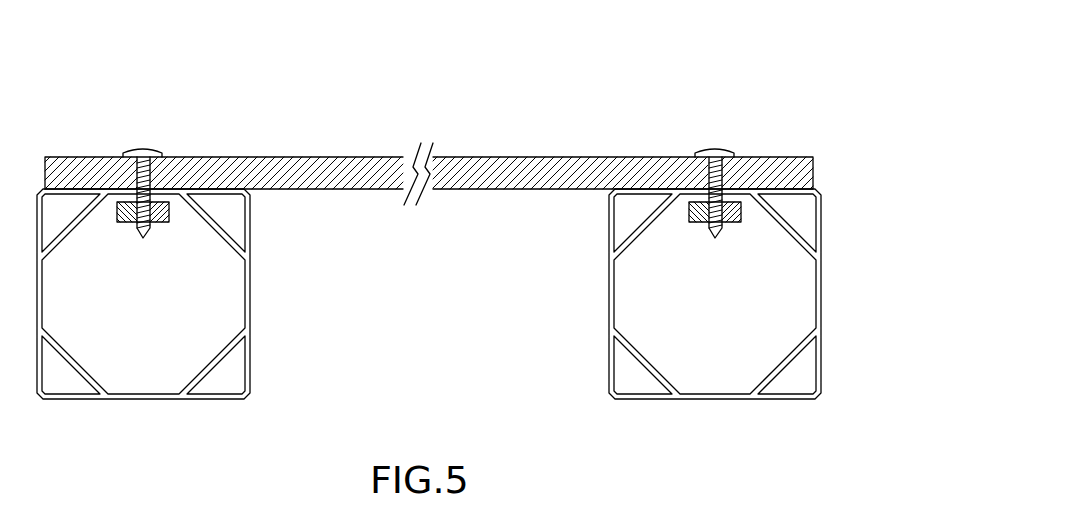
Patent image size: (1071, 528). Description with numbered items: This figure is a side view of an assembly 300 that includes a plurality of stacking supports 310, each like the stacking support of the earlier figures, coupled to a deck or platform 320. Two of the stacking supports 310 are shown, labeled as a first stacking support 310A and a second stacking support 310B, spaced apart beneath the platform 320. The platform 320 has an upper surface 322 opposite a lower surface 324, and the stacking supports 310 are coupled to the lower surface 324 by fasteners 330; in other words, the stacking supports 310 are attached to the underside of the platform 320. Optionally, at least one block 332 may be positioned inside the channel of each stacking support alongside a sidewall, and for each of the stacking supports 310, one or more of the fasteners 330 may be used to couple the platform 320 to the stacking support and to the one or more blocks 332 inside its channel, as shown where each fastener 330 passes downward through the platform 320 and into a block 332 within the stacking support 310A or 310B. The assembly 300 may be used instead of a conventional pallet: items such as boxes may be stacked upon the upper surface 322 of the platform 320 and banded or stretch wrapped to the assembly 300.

The assembly 300 is at (690, 42).
The stacking supports 310 is at (842, 295).
The first tubular frame member 310A is at (143, 395).
The second tubular frame member 310B is at (714, 395).
The platform 320 is at (429, 174).
The upper surface 322 is at (313, 157).
The lower surface 324 is at (495, 190).
The fasteners 330 is at (142, 149).
The block 332 is at (118, 223).